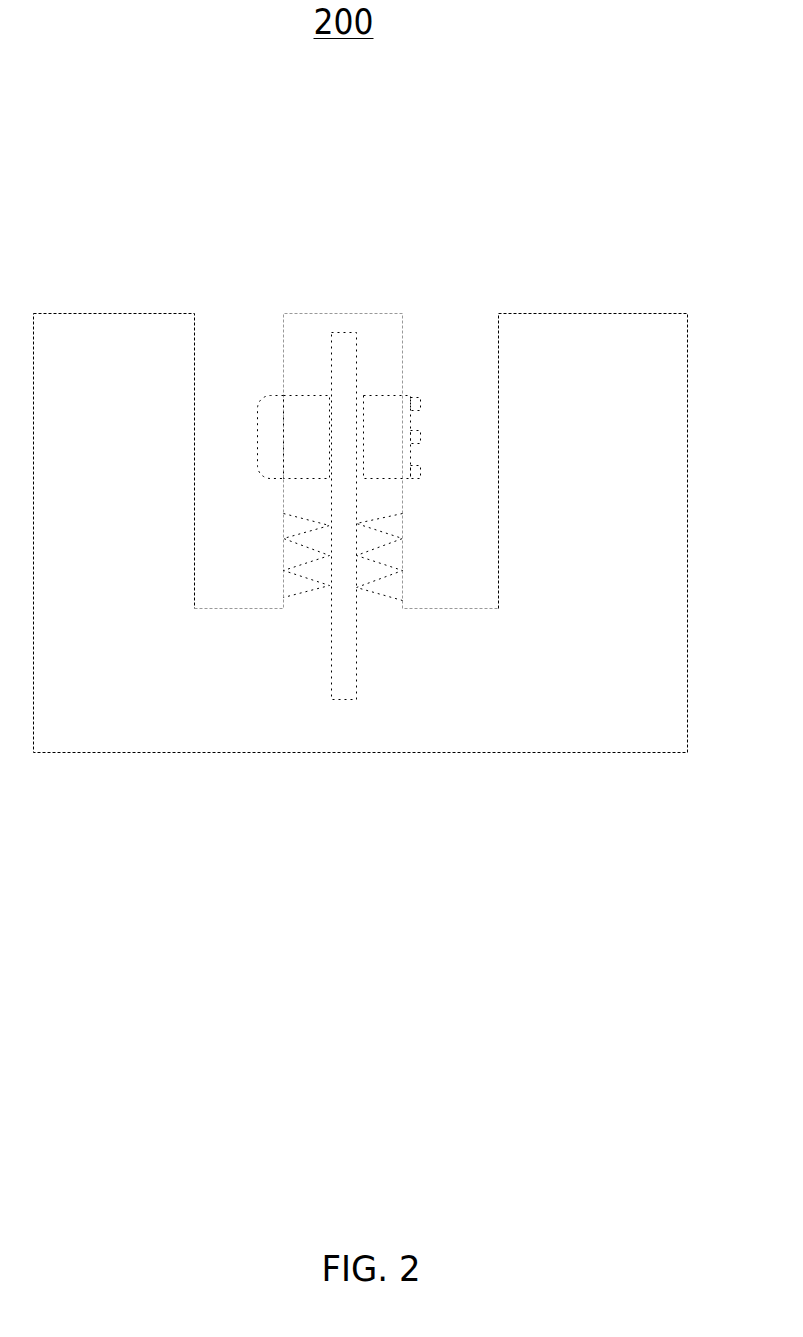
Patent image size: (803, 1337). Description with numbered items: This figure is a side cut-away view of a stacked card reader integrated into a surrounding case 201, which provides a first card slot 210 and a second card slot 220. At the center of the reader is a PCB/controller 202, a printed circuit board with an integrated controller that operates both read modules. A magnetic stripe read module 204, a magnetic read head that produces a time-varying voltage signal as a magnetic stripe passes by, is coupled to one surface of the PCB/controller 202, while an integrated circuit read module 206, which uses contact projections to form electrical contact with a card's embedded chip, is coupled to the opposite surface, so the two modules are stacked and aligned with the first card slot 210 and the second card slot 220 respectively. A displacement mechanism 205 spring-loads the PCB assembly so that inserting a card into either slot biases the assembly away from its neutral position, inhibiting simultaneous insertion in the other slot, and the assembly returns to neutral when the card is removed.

The surrounding case 201 is at (633, 760).
The PCB/controller 202 is at (349, 328).
The magnetic stripe read module 204 is at (265, 390).
The displacement mechanism 205 is at (280, 542).
The integrated circuit (IC) read module 206 is at (412, 392).
The first card slot 210 is at (244, 586).
The second card slot 220 is at (460, 572).